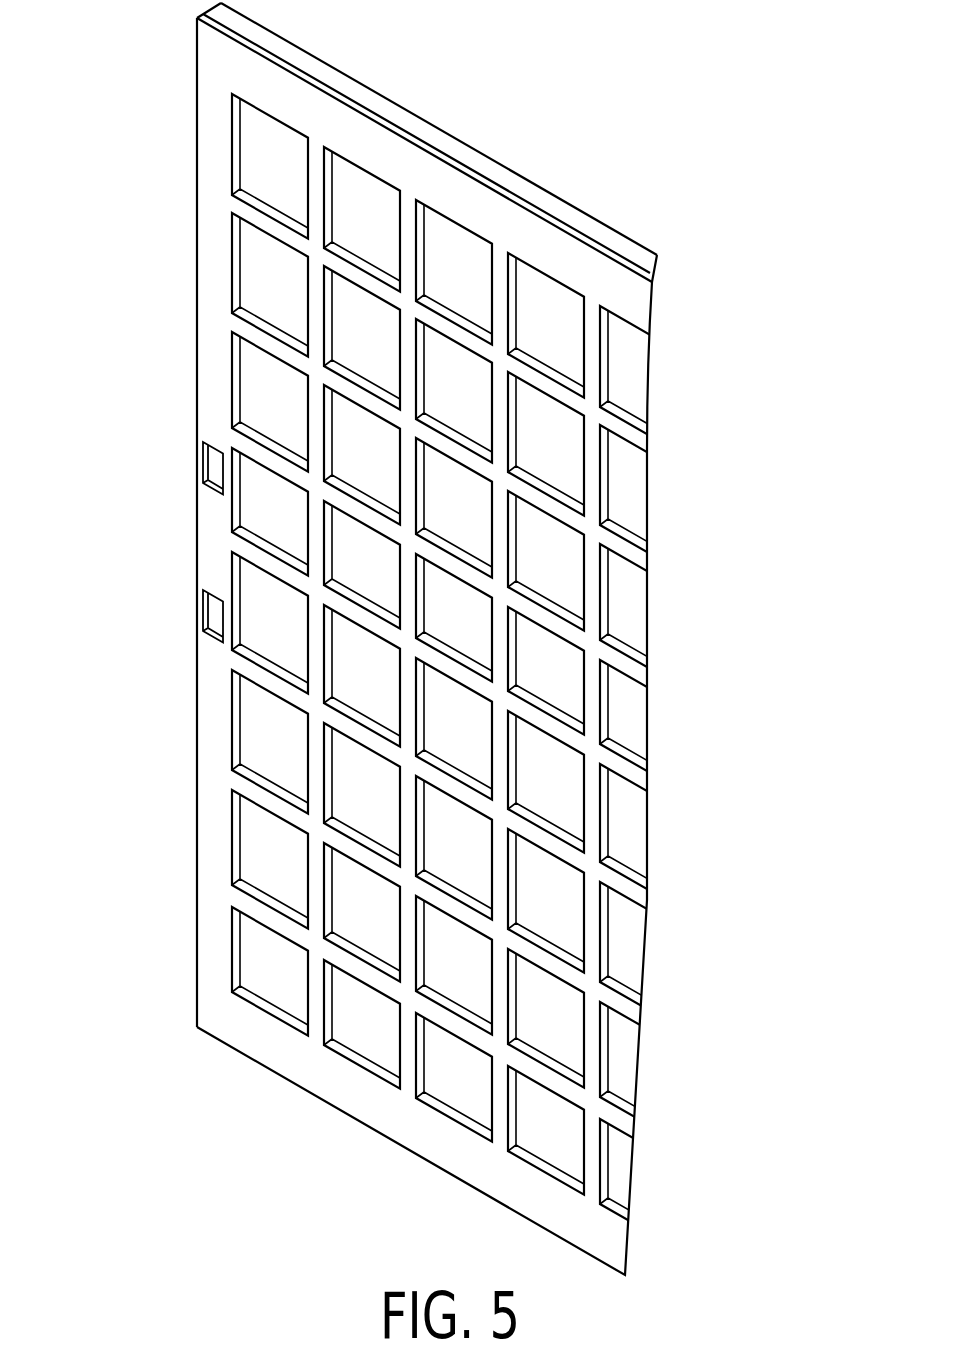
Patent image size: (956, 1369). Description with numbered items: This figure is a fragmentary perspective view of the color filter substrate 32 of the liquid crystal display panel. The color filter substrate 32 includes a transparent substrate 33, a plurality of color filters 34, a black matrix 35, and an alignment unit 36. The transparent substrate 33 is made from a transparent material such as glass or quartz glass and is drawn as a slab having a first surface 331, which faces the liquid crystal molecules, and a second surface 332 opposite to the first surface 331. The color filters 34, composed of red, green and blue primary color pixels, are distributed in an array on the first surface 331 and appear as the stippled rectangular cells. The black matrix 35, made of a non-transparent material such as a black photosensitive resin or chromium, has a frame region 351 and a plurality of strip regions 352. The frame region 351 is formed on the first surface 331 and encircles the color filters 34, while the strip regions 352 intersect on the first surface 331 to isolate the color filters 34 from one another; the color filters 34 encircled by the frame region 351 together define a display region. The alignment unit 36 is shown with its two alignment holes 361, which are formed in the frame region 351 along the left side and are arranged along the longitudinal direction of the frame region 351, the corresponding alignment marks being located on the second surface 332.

The color filter substrate 32 is at (545, 158).
The transparent substrate 33 is at (350, 86).
The first surface 331 is at (553, 213).
The second surface 332 is at (602, 222).
The color filters 34 is at (249, 957).
The black matrix 35 is at (380, 648).
The frame region 351 is at (215, 247).
The strip regions 352 is at (452, 1030).
The alignment unit 36 is at (114, 412).
The alignment holes 361 is at (203, 611).